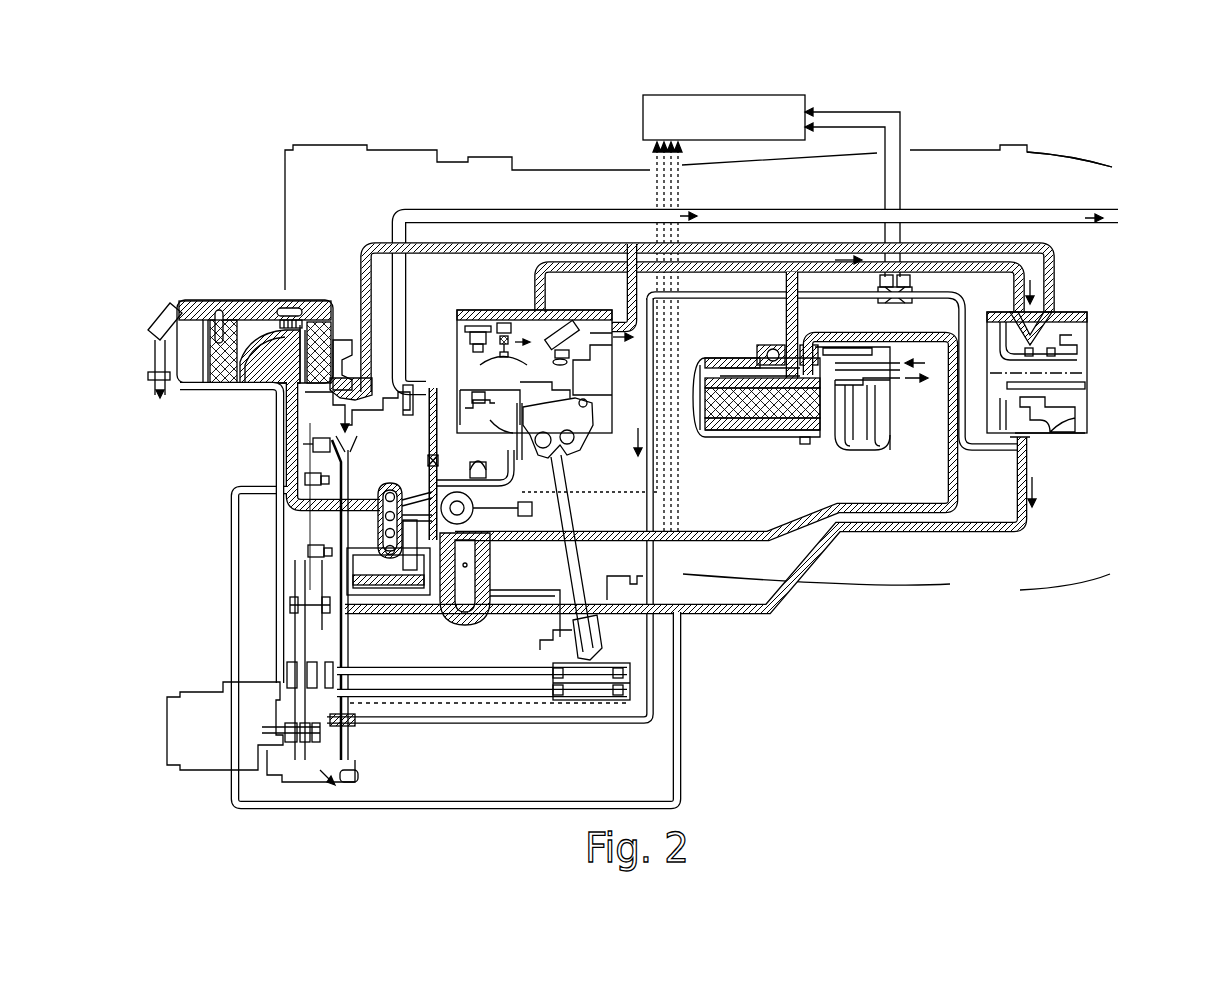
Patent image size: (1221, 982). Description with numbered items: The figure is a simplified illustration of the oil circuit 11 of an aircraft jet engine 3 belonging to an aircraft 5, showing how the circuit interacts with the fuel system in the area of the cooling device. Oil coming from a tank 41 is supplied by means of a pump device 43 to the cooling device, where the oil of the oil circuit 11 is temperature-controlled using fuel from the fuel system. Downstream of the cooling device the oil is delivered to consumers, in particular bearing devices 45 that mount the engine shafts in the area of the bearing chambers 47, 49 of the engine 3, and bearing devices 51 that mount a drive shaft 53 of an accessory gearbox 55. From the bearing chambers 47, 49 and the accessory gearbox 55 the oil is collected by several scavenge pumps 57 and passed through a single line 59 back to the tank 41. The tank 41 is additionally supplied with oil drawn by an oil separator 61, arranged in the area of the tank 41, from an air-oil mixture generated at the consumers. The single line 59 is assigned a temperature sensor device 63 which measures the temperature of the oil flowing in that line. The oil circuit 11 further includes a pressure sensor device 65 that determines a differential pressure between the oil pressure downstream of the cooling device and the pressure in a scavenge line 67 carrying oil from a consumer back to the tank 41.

The aircraft/jet engine 3 is at (373, 140).
The aircraft 5 is at (1147, 167).
The oil circuit 11 is at (268, 148).
The tank 41 is at (250, 300).
The pump device 43 is at (295, 646).
The bearing devices 45 is at (503, 317).
The bearing chamber 47 is at (568, 312).
The bearing chamber 49 is at (1087, 347).
The bearing devices 51 is at (595, 633).
The drive shaft 53 is at (580, 593).
The accessory gearbox 55 is at (337, 592).
The scavenge pumps 57 is at (387, 538).
The single line 59 is at (287, 447).
The oil separator 61 is at (263, 380).
The temperature sensor device 63 is at (273, 490).
The pressure sensor device 65 is at (907, 297).
The scavenge line 67 is at (1053, 420).